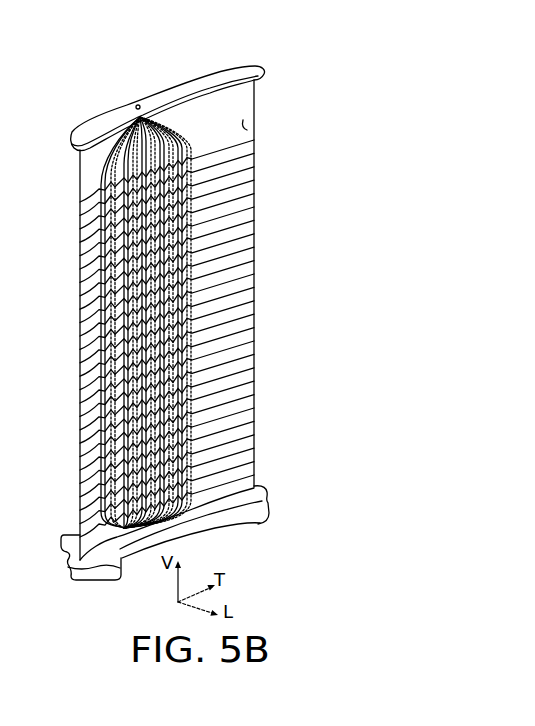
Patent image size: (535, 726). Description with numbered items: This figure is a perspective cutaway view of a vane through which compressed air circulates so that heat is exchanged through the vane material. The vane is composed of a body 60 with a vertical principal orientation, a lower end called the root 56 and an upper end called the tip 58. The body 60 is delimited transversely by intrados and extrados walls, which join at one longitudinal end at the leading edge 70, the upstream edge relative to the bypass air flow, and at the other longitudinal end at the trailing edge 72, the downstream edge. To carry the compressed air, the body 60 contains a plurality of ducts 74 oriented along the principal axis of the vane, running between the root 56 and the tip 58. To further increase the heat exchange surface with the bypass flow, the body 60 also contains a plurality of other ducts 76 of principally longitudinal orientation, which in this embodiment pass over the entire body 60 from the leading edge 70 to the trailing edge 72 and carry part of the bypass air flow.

The root 56 is at (240, 521).
The tip 58 is at (118, 112).
The body 60 is at (263, 263).
The leading edge 70 is at (82, 420).
The trailing edge 72 is at (256, 328).
The ducts 74 is at (182, 124).
The other ducts 76 is at (247, 130).